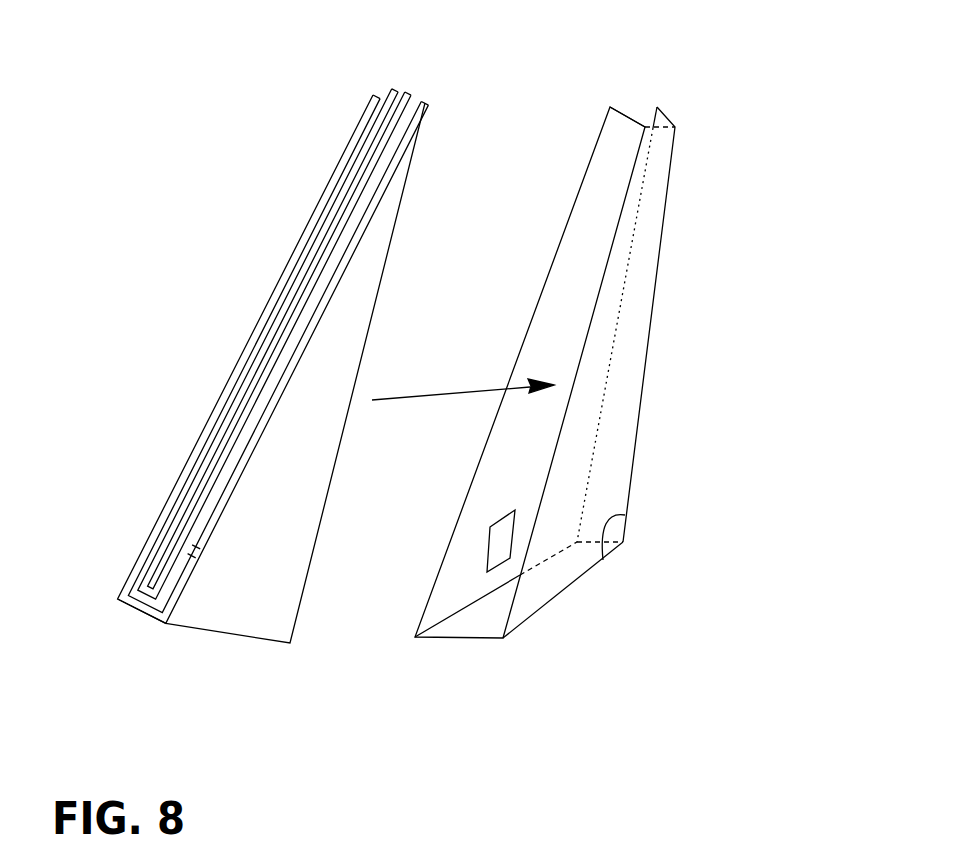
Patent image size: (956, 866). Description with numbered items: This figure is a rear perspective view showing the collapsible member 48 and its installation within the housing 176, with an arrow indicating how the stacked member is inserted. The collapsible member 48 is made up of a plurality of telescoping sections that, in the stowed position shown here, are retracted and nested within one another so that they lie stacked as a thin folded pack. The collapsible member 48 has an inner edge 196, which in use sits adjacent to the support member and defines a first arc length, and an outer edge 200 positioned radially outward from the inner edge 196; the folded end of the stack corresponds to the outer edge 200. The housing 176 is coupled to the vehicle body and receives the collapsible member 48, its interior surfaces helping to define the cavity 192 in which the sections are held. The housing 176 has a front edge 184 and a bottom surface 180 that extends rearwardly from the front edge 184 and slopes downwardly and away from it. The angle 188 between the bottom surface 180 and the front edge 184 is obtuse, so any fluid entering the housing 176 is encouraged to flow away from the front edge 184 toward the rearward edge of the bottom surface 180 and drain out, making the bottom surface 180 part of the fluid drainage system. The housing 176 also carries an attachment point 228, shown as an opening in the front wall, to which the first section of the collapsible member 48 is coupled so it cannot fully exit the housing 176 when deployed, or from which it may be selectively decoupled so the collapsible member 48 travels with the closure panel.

The collapsible member 48 is at (275, 358).
The inner edge 196 is at (423, 102).
The outer edge 200 is at (152, 617).
The housing 176 is at (622, 140).
The cavity 192 is at (588, 227).
The front edge 184 is at (641, 398).
The angle 188 is at (606, 505).
The bottom surface 180 is at (487, 608).
The attachment point 228 is at (490, 542).